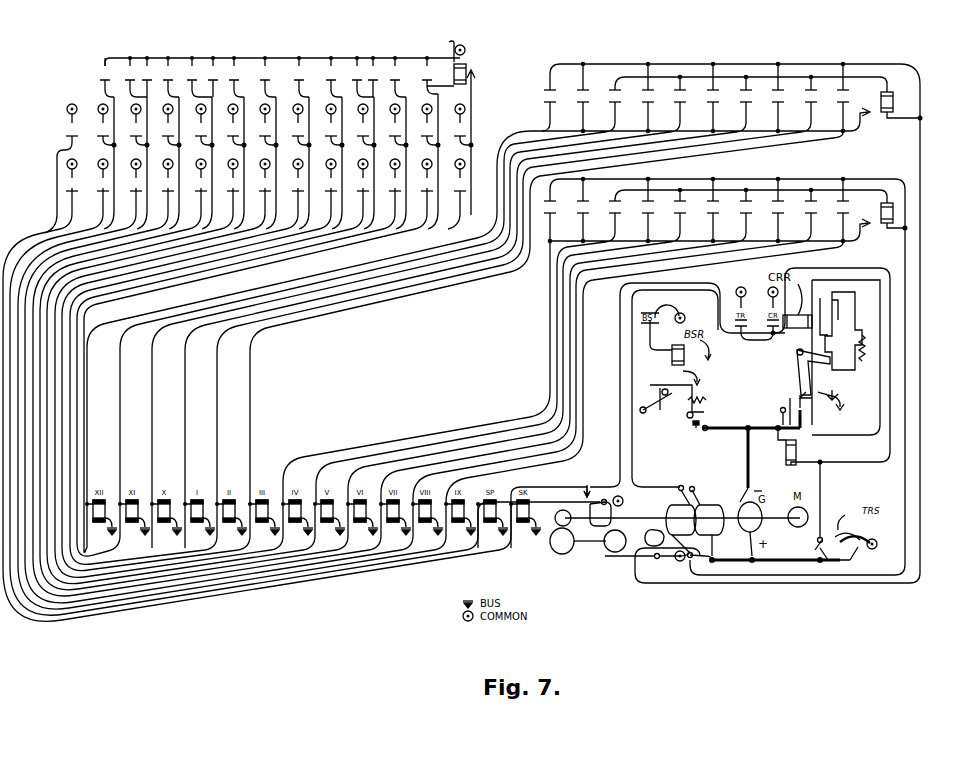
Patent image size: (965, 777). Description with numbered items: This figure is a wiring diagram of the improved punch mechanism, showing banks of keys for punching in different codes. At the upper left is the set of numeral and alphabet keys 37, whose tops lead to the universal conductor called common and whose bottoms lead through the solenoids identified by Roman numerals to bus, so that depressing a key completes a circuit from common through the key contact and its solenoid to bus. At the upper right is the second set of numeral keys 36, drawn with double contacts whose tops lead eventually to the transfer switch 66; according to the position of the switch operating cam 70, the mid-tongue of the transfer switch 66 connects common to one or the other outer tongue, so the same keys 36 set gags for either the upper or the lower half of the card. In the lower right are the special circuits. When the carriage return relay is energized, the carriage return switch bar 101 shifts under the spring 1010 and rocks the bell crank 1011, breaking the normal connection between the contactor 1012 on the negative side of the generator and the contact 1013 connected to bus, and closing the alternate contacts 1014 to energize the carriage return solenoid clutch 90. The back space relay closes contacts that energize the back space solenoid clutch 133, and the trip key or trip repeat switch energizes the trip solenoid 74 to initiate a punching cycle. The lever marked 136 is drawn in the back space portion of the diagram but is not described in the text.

The set of numeral and alphabet keys 37 is at (280, 38).
The set of numeral keys 36 is at (742, 45).
The back space lever 136 is at (668, 406).
The carriage return switch bar 101 is at (850, 325).
The spring 1010 is at (868, 362).
The bell crank 1011 is at (793, 366).
The alternate contacts 1014 is at (790, 389).
The contactor 1012 is at (790, 412).
The contact 1013 is at (838, 398).
The trip solenoid 74 is at (798, 442).
The switch operating cam 70 is at (622, 540).
The carriage return solenoid clutch 90 is at (692, 535).
The back space solenoid clutch 133 is at (716, 528).
The transfer switch 66 is at (640, 565).